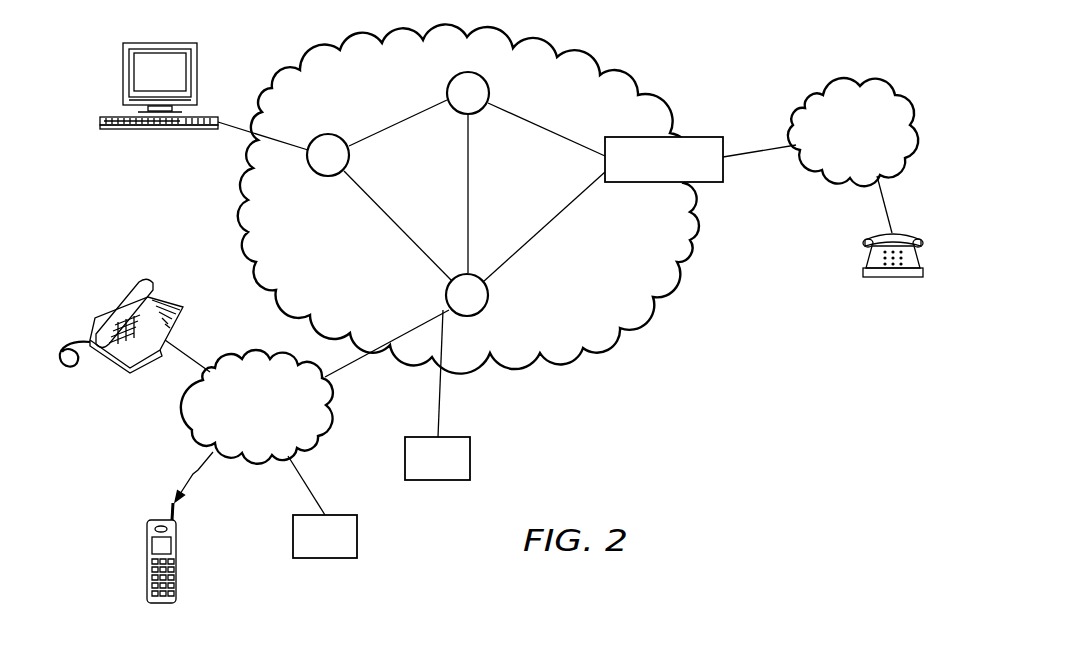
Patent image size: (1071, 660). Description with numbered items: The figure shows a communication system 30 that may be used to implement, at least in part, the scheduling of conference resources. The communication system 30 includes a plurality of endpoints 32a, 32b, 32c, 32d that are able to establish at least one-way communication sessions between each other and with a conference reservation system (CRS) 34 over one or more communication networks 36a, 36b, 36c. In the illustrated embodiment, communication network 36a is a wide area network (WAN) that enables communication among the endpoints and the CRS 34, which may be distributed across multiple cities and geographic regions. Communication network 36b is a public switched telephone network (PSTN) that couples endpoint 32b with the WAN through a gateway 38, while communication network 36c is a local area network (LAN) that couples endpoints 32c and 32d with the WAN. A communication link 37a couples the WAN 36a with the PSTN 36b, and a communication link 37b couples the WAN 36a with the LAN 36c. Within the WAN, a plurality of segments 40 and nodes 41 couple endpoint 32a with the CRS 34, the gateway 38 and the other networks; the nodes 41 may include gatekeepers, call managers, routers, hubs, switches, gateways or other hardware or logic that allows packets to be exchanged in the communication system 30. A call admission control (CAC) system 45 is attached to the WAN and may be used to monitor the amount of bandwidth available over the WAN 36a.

The communication system 30 is at (668, 396).
The endpoint 32a is at (122, 73).
The endpoint 32b is at (893, 277).
The endpoint 32c is at (147, 560).
The endpoint 32d is at (107, 300).
The conference reservation system 34 is at (358, 538).
The communication network 36a is at (346, 286).
The communication network 36b is at (877, 85).
The communication network 36c is at (185, 413).
The communication link 37a is at (758, 147).
The communication link 37b is at (350, 365).
The gateway 38 is at (638, 183).
The segments 40 is at (258, 132).
The nodes 41 is at (327, 134).
The call admission control system 45 is at (472, 458).